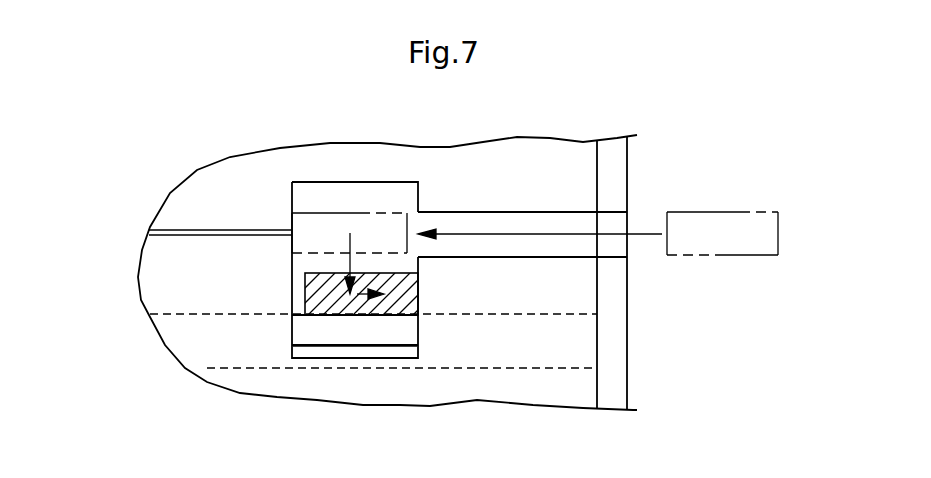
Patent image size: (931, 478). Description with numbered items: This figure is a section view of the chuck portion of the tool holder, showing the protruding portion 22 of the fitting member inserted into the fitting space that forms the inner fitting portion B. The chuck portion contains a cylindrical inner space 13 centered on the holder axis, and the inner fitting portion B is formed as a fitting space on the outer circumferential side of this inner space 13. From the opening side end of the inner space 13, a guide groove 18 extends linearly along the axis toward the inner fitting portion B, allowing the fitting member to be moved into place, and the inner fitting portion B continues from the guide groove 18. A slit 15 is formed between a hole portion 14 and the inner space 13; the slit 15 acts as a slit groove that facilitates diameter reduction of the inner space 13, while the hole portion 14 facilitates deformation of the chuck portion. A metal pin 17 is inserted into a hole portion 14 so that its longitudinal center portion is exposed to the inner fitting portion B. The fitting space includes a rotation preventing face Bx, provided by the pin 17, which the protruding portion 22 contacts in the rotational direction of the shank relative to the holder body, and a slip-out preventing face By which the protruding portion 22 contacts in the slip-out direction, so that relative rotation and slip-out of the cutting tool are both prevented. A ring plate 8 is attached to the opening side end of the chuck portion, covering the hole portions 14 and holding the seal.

The inner space 13 is at (172, 290).
The slit 15 is at (207, 230).
The hole portion 14 is at (458, 368).
The ring plate 8 is at (630, 337).
The guide groove 18 is at (528, 212).
The inner fitting portion B is at (329, 205).
The protruding portion 22 is at (305, 280).
The rotation preventing face Bx is at (330, 313).
The slip-out preventing face By is at (403, 300).
The pin 17 is at (350, 333).